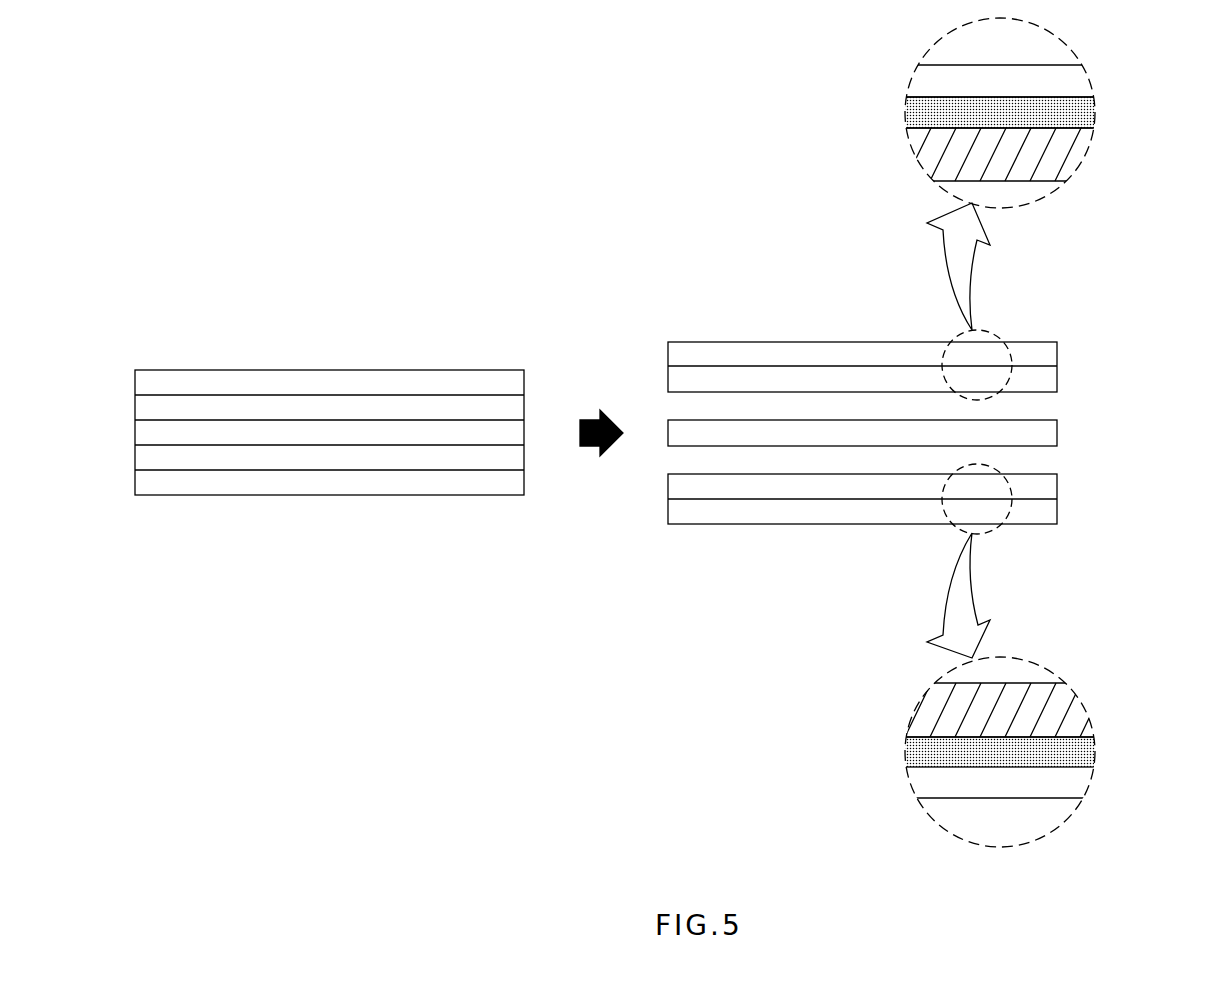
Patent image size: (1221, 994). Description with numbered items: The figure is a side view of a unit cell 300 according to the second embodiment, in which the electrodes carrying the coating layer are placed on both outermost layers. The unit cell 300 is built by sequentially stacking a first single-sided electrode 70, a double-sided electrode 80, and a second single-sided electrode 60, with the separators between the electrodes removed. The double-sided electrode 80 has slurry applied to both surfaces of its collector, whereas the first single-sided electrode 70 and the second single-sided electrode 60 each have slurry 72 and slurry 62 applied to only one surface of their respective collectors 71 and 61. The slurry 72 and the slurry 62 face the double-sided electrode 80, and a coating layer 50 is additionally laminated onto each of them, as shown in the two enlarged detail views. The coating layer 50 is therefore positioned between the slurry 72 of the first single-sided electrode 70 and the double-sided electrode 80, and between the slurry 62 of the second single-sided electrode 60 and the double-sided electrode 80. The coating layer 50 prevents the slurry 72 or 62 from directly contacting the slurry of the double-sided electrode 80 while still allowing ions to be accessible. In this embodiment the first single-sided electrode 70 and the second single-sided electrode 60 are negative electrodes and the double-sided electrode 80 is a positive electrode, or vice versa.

The unit cell 300 is at (670, 252).
The coating layer 50 is at (1068, 157).
The second single-sided electrode 60 is at (1157, 78).
The collector 61 is at (1080, 80).
The slurry 62 is at (1080, 115).
The first single-sided electrode 70 is at (1157, 747).
The collector 71 is at (1080, 786).
The slurry 72 is at (1080, 751).
The double-sided electrode 80 is at (1048, 433).